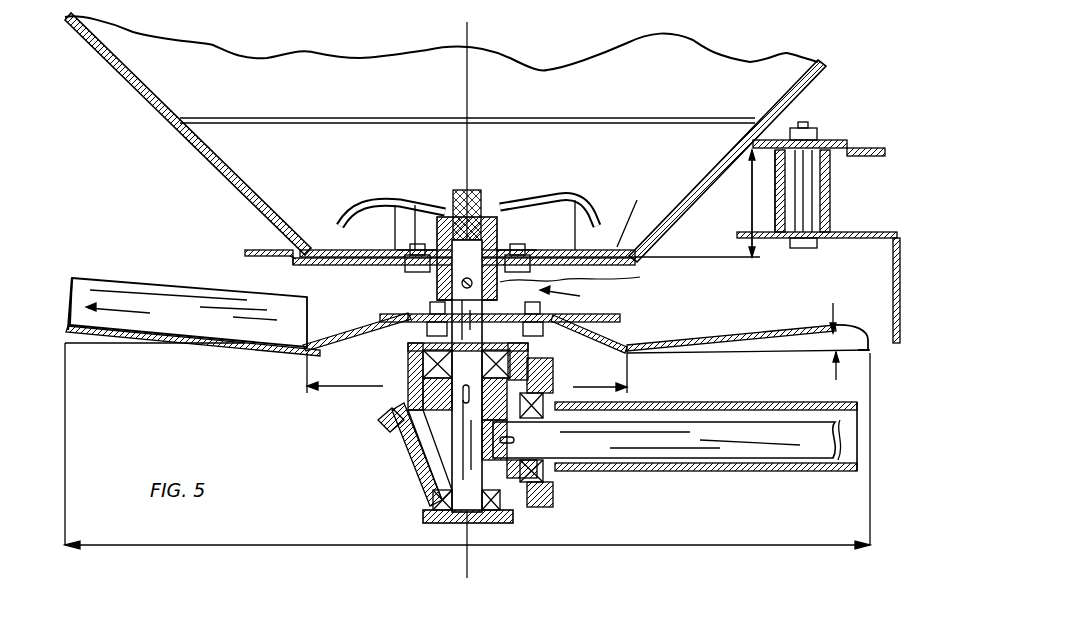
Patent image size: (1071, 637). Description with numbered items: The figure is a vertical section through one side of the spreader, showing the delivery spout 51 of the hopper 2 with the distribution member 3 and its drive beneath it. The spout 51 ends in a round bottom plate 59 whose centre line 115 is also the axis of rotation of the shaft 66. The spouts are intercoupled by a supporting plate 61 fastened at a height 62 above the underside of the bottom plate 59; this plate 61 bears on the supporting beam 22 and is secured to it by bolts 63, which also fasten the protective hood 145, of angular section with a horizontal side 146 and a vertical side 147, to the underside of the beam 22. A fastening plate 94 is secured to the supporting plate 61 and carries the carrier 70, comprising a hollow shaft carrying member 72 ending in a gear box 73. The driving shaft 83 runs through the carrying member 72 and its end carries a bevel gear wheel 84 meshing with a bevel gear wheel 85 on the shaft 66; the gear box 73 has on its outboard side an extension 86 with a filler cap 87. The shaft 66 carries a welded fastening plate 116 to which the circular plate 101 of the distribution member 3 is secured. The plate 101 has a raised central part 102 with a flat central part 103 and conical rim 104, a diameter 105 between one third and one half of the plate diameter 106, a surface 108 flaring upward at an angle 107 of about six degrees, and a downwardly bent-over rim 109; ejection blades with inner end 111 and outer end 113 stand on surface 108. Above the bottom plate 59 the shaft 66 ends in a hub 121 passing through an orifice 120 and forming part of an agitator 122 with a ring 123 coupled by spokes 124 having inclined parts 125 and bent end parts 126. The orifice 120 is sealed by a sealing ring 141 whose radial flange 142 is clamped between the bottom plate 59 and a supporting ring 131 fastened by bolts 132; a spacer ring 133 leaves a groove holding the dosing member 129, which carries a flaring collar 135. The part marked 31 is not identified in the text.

The hopper 2 is at (586, 60).
The distribution member 3 is at (150, 347).
The supporting beam 22 is at (832, 190).
The hopper top 31 is at (147, 40).
The delivery spout 51 is at (200, 149).
The bottom plate 59 is at (617, 247).
The supporting plate 61 is at (852, 140).
The height 62 is at (752, 198).
The bolts 63 is at (805, 128).
The shaft 66 is at (457, 438).
The carrier 70 is at (762, 472).
The shaft carrying member 72 is at (833, 470).
The gear box 73 is at (428, 520).
The driving shaft 83 is at (710, 436).
The bevel gear wheel 84 is at (528, 495).
The bevel gear wheel 85 is at (410, 410).
The extension 86 is at (385, 444).
The filler cap 87 is at (378, 424).
The fastening plate 94 is at (885, 150).
The circular plate 101 is at (245, 352).
The central part 102 is at (357, 326).
The flat central part 103 is at (410, 316).
The conical rim 104 is at (588, 332).
The diameter 105 is at (387, 387).
The diameter 106 is at (343, 542).
The angle 107 is at (811, 341).
The surface 108 is at (755, 340).
The bent-over rim 109 is at (878, 310).
The inner end 111 is at (300, 300).
The end 113 is at (85, 280).
The vertical center line 115 is at (467, 88).
The fastening plate 116 is at (410, 324).
The orifice 120 is at (483, 193).
The hub 121 is at (492, 218).
The agitator 122 is at (557, 200).
The ring 123 is at (345, 218).
The spokes 124 is at (425, 215).
The parts 125 is at (388, 205).
The end parts 126 is at (595, 203).
The dosing member 129 is at (300, 318).
The supporting ring 131 is at (590, 280).
The bolts 132 is at (415, 205).
The spacer ring 133 is at (540, 200).
The flaring collar 135 is at (258, 250).
The sealing ring 141 is at (470, 215).
The radial flange 142 is at (405, 292).
The protective hood 145 is at (895, 232).
The horizontal side 146 is at (737, 234).
The vertical side 147 is at (893, 262).